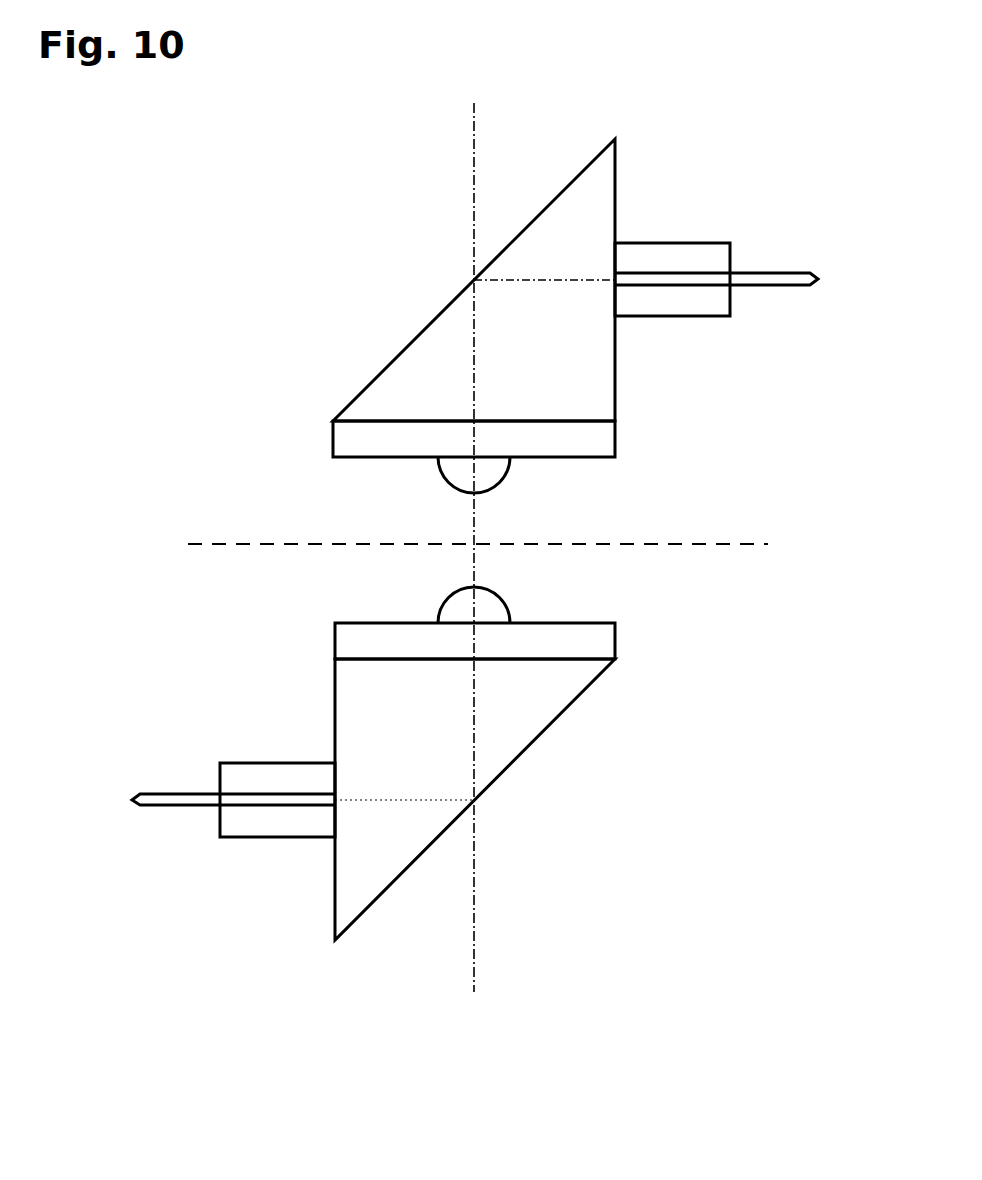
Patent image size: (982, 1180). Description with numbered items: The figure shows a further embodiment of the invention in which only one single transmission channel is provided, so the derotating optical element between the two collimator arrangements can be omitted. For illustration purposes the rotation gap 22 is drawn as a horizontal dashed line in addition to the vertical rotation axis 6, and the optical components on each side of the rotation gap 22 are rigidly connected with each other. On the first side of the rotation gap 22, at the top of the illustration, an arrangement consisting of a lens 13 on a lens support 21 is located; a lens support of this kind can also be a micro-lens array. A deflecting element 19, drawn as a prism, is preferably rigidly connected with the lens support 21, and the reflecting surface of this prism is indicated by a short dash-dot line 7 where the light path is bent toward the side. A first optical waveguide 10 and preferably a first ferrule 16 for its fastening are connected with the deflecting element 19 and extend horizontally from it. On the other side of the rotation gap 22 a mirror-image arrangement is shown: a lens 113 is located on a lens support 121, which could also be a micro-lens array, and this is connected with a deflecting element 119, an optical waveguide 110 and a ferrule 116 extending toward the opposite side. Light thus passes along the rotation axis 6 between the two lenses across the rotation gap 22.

The rotation axis 6 is at (465, 922).
The reflection axis 7 is at (510, 282).
The first optical waveguide 10 is at (822, 272).
The lens 13 is at (492, 473).
The first ferrule 16 is at (735, 258).
The deflecting element 19 is at (440, 350).
The lens support 21 is at (622, 437).
The rotation gap 22 is at (590, 548).
The optical waveguide 110 is at (128, 810).
The lens 113 is at (457, 607).
The ferrule 116 is at (212, 820).
The deflecting element 119 is at (527, 720).
The lens support 121 is at (325, 640).